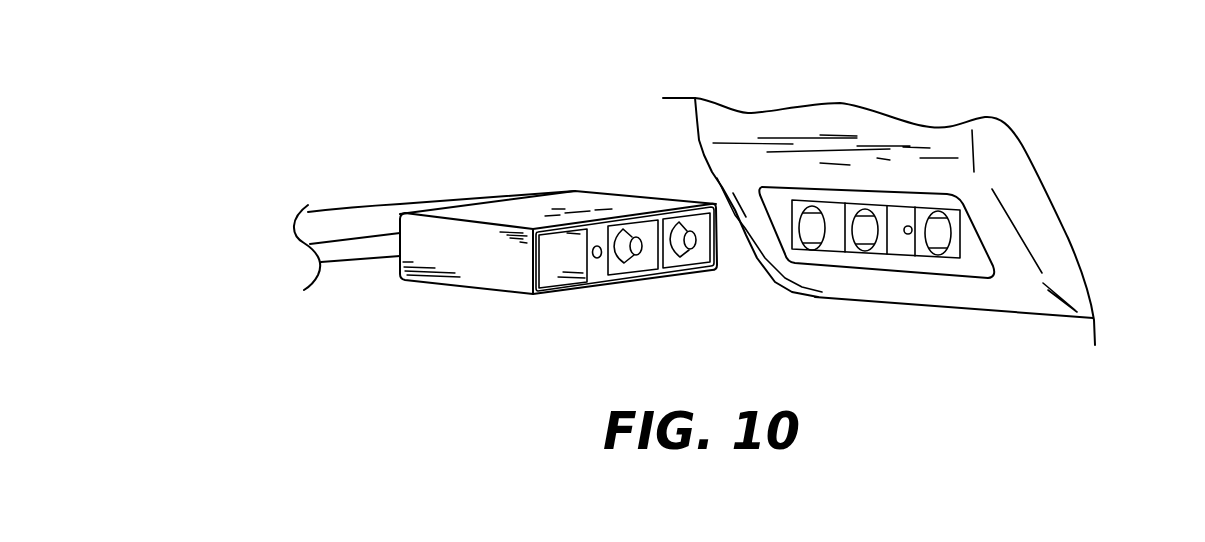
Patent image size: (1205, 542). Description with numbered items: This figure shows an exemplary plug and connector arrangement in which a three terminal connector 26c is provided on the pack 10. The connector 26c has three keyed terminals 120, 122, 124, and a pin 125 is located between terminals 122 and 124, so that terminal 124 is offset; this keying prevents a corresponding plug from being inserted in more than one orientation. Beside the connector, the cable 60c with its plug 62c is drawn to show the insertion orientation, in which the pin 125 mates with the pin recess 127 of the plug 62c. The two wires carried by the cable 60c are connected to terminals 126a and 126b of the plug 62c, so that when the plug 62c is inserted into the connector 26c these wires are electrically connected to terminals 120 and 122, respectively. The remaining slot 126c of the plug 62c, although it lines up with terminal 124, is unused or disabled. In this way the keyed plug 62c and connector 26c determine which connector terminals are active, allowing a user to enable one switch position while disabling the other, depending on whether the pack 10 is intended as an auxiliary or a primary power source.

The pack 10 is at (1110, 204).
The three terminal connector 26c is at (865, 282).
The cable 60c is at (461, 161).
The plug 62c is at (540, 197).
The terminal 120 is at (803, 223).
The terminal 122 is at (870, 230).
The terminal 124 is at (938, 230).
The pin 125 is at (908, 234).
The terminal 126a is at (715, 270).
The terminal 126b is at (640, 258).
The slot 126c is at (553, 262).
The pin recess 127 is at (598, 258).